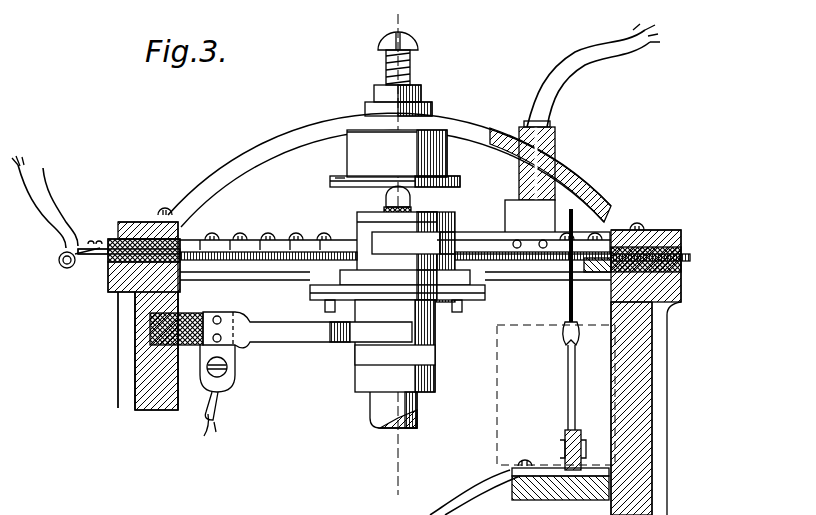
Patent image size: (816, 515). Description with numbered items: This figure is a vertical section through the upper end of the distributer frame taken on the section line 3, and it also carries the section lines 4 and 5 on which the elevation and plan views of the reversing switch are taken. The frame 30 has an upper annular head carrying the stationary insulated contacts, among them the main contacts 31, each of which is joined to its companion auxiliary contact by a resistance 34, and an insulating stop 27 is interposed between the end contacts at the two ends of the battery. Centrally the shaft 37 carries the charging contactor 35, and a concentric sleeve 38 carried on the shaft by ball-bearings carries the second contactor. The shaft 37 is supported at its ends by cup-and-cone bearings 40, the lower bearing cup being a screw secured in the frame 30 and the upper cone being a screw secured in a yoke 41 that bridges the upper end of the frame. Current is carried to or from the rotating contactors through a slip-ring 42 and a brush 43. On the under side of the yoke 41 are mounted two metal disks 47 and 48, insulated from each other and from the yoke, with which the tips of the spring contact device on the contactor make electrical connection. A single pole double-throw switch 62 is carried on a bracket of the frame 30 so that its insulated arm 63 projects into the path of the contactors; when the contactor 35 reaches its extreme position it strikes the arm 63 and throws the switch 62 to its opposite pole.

The section line 3 is at (342, 18).
The section line 4 is at (566, 147).
The section line 5 is at (490, 406).
The insulating stop 27 is at (690, 259).
The frame 30 is at (640, 450).
The main contacts 31 is at (84, 256).
The resistance 34 is at (58, 264).
The charging contactor 35 is at (412, 210).
The shaft 37 is at (384, 200).
The sleeve 38 is at (372, 404).
The cup-and-cone bearings 40 is at (386, 178).
The yoke 41 is at (470, 131).
The slip-ring 42 is at (365, 234).
The brush 43 is at (418, 246).
The metal disk 47 is at (340, 176).
The metal disk 48 is at (332, 184).
The single pole double-throw switch 62 is at (566, 395).
The insulated arm 63 is at (566, 318).